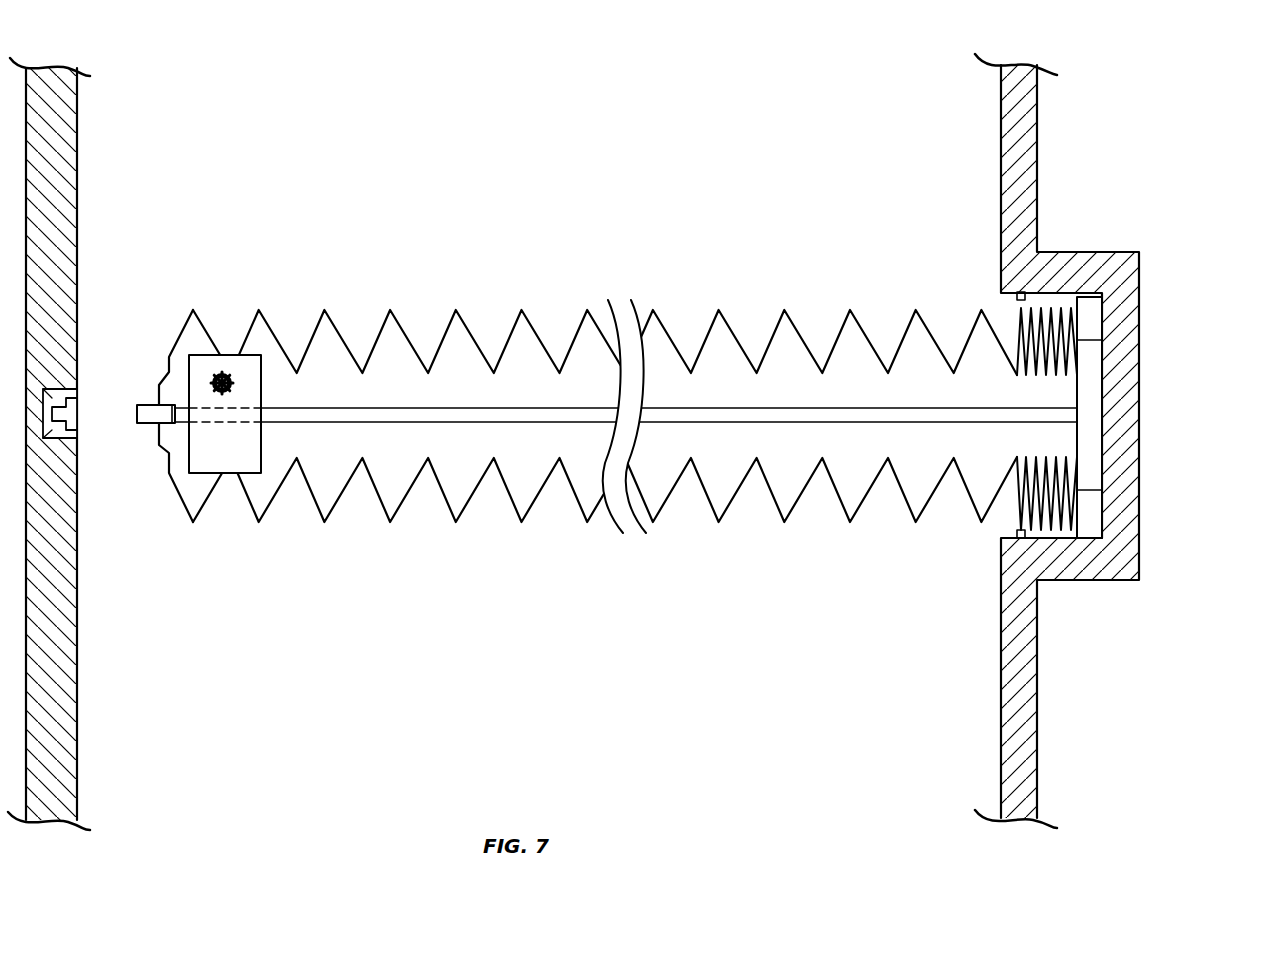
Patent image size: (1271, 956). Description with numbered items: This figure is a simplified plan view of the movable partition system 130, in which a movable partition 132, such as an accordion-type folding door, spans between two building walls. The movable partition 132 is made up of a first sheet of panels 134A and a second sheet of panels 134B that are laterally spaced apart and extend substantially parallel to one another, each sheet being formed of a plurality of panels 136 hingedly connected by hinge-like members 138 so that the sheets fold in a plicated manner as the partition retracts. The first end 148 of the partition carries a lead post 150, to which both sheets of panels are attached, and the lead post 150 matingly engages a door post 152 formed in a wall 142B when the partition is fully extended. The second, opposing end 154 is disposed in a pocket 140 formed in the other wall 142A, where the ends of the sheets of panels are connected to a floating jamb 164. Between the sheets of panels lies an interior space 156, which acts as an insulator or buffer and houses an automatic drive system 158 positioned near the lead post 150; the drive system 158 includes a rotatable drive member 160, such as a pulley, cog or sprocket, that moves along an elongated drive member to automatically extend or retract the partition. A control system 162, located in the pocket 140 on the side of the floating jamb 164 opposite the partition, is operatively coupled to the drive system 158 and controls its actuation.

The movable partition system 130 is at (442, 244).
The movable partition 132 is at (635, 542).
The first sheet of panels 134A is at (818, 326).
The second sheet of panels 134B is at (735, 512).
The panels 136 is at (410, 490).
The hinge-like members 138 is at (527, 521).
The pocket 140 is at (1008, 531).
The wall 142A is at (1000, 722).
The another wall 142B is at (77, 693).
The first end 148 is at (181, 326).
The lead post 150 is at (143, 405).
The door post 152 is at (77, 421).
The second, opposing end 154 is at (1019, 390).
The interior space 156 is at (626, 398).
The automatic drive system 158 is at (235, 502).
The rotatable drive member 160 is at (222, 371).
The control system 162 is at (1088, 408).
The floating jamb 164 is at (1082, 525).